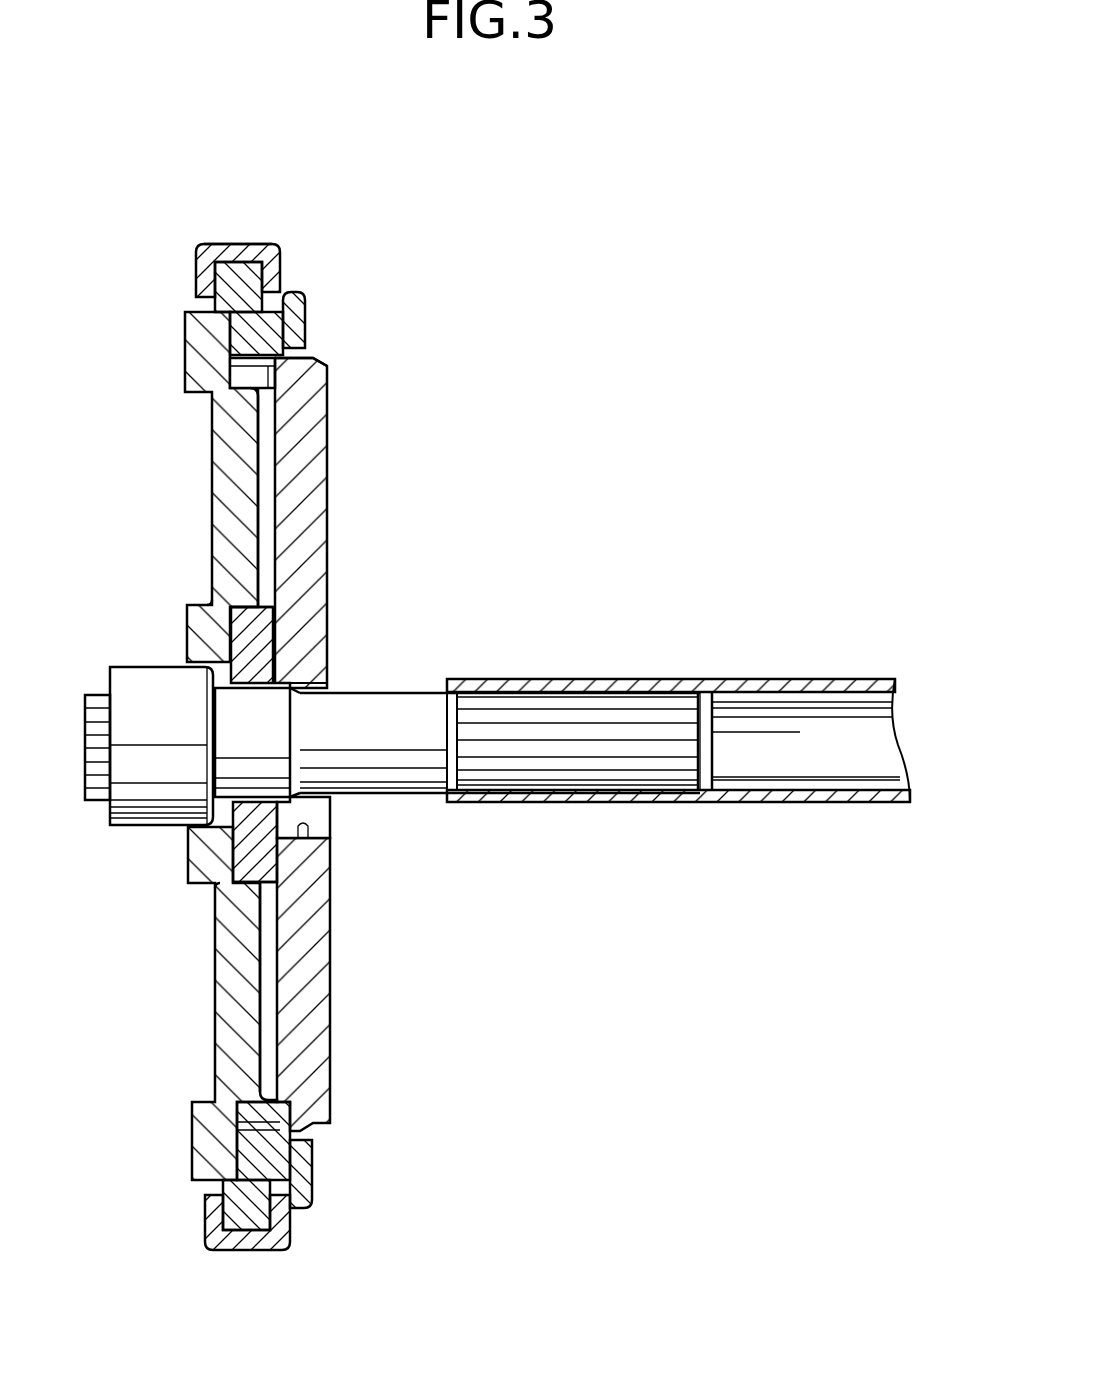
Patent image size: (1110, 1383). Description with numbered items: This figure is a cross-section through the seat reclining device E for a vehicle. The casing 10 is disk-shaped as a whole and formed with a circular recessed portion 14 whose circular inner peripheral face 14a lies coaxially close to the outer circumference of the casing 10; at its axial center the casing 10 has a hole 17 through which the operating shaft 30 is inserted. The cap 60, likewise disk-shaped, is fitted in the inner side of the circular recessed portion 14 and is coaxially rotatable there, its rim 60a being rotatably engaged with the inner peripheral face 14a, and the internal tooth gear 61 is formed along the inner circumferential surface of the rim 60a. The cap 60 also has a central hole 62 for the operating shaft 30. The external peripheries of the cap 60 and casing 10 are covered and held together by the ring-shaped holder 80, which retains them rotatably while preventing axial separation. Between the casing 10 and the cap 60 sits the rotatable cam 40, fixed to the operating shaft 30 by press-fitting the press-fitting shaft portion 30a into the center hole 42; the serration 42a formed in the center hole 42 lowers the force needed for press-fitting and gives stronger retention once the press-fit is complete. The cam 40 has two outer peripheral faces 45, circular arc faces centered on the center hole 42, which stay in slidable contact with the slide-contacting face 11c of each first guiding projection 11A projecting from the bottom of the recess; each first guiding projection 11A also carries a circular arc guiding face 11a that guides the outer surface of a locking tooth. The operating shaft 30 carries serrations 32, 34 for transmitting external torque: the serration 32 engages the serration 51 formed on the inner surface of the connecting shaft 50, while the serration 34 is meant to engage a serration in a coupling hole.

The seat reclining device E is at (285, 235).
The ring-shaped holder 80 is at (199, 262).
The circular inner peripheral face 14a is at (268, 312).
The circular recessed portion 14 is at (285, 330).
The casing 10 is at (183, 362).
The rim 60a is at (255, 372).
The internal tooth gear 61 is at (312, 362).
The cap 60 is at (330, 388).
The first guiding projection 11A is at (258, 483).
The slide-contacting face 11c is at (205, 603).
The outer peripheral face 45 is at (262, 605).
The cam 40 is at (276, 636).
The center hole 42 is at (285, 675).
The hole 17 is at (195, 672).
The serration 34 is at (100, 695).
The serration 42a is at (238, 800).
The operating shaft 30 is at (400, 693).
The press-fitting shaft portion 30a is at (288, 796).
The hole 62 is at (305, 828).
The circular arc guiding face 11a is at (268, 967).
The connecting shaft 50 is at (783, 679).
The serration 32 is at (637, 715).
The serration 51 is at (705, 705).